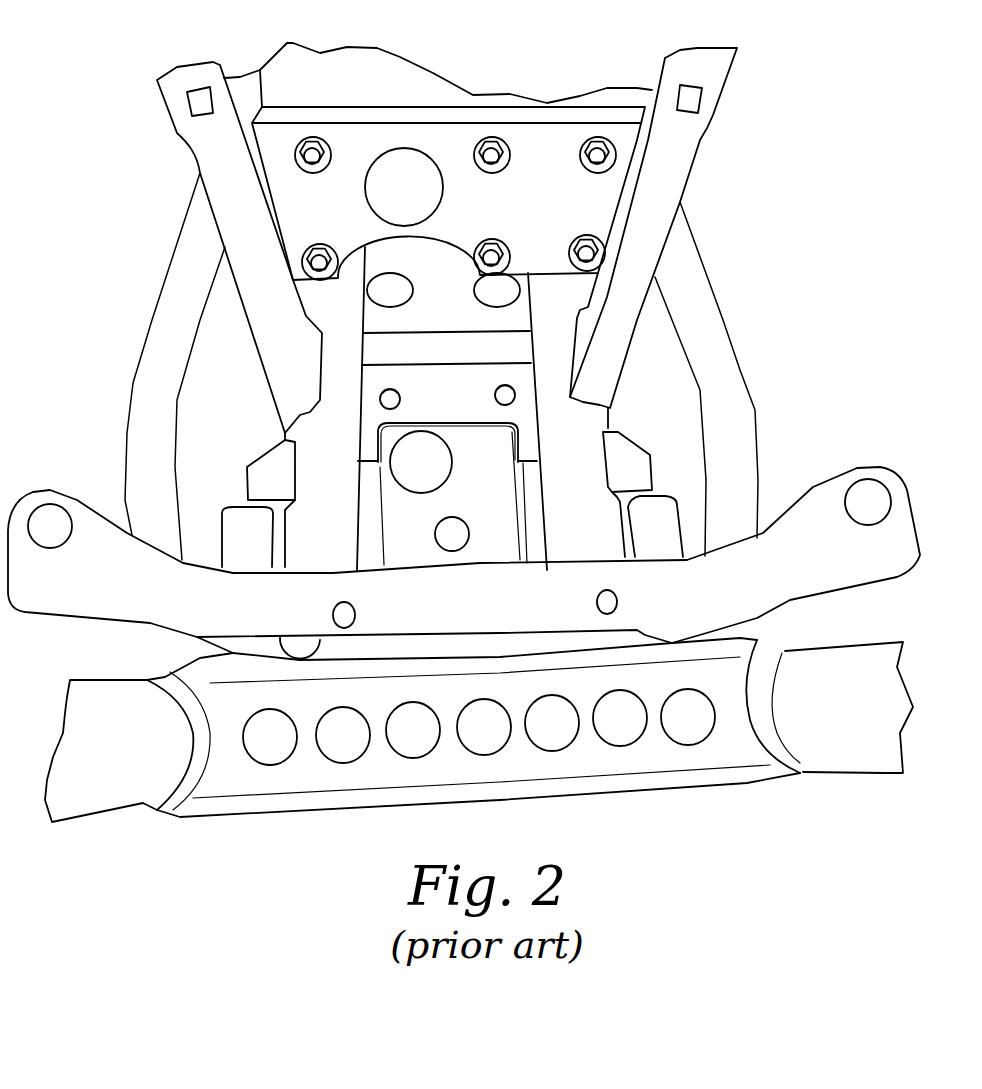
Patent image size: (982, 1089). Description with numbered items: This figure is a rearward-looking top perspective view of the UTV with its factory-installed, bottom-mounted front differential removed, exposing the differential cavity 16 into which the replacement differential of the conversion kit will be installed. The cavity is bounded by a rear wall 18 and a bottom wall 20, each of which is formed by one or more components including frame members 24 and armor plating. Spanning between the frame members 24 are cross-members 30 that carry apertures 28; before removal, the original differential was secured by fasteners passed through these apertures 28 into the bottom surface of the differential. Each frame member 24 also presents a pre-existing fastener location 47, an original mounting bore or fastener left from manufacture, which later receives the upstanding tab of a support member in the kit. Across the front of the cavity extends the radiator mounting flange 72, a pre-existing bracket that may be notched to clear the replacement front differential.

The differential cavity 16 is at (645, 412).
The rear wall 18 is at (245, 355).
The bottom wall 20 is at (253, 433).
The frame member 24 is at (240, 288).
The apertures 28 is at (393, 410).
The cross-members 30 is at (463, 360).
The pre-existing fastener location 47 is at (188, 98).
The radiator mounting flange 72 is at (450, 617).